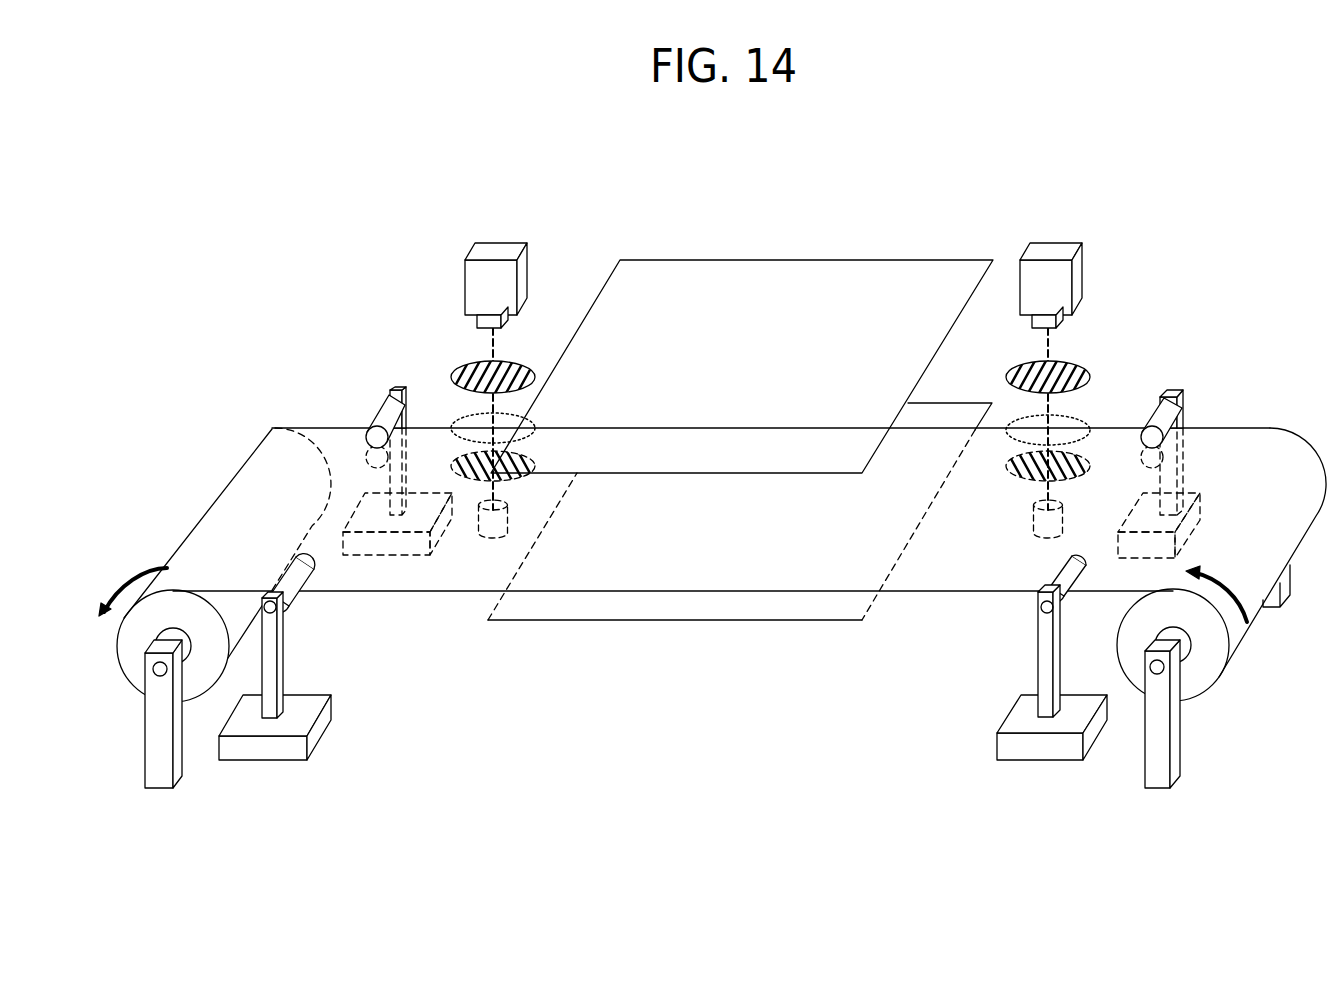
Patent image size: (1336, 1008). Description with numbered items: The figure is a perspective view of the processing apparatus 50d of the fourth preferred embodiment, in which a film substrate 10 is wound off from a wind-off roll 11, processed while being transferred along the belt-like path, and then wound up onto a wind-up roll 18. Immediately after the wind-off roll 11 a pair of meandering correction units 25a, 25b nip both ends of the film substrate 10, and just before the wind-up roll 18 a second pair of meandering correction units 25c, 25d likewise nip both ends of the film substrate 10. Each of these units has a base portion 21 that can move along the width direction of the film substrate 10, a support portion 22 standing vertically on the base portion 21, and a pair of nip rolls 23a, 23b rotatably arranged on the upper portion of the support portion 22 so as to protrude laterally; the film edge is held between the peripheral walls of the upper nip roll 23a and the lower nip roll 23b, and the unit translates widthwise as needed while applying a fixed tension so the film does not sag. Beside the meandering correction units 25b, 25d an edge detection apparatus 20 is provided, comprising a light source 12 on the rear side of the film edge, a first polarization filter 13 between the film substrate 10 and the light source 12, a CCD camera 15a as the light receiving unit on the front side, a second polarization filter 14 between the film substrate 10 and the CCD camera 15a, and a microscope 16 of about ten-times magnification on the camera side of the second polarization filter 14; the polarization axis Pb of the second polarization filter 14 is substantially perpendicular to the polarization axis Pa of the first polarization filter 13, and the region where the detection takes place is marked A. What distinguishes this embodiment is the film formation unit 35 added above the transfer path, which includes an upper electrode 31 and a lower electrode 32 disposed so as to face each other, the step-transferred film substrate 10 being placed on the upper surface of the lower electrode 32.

The processing apparatus 50d is at (195, 243).
The film substrate 10 is at (414, 578).
The wind-off roll 11 is at (1222, 688).
The wind-up roll 18 is at (110, 692).
The edge detection apparatus 20 is at (1102, 371).
The light source 12 is at (1062, 520).
The first polarization filter 13 is at (1090, 456).
The second polarization filter 14 is at (1087, 367).
The CCD camera 15a is at (1077, 270).
The microscope 16 is at (1070, 318).
The base portion 21 is at (997, 747).
The support portion 22 is at (1060, 668).
The upper nip roll 23a is at (1060, 573).
The lower nip roll 23b is at (1037, 667).
The meandering correction unit 25a is at (975, 674).
The meandering correction unit 25b is at (1192, 408).
The meandering correction unit 25c is at (262, 752).
The meandering correction unit 25d is at (353, 415).
The upper electrode 31 is at (858, 270).
The lower electrode 32 is at (933, 418).
The film formation unit 35 is at (740, 376).
The inspection area A is at (1016, 420).
The polarization axis Pa is at (1010, 470).
The polarization axis Pb is at (1020, 365).